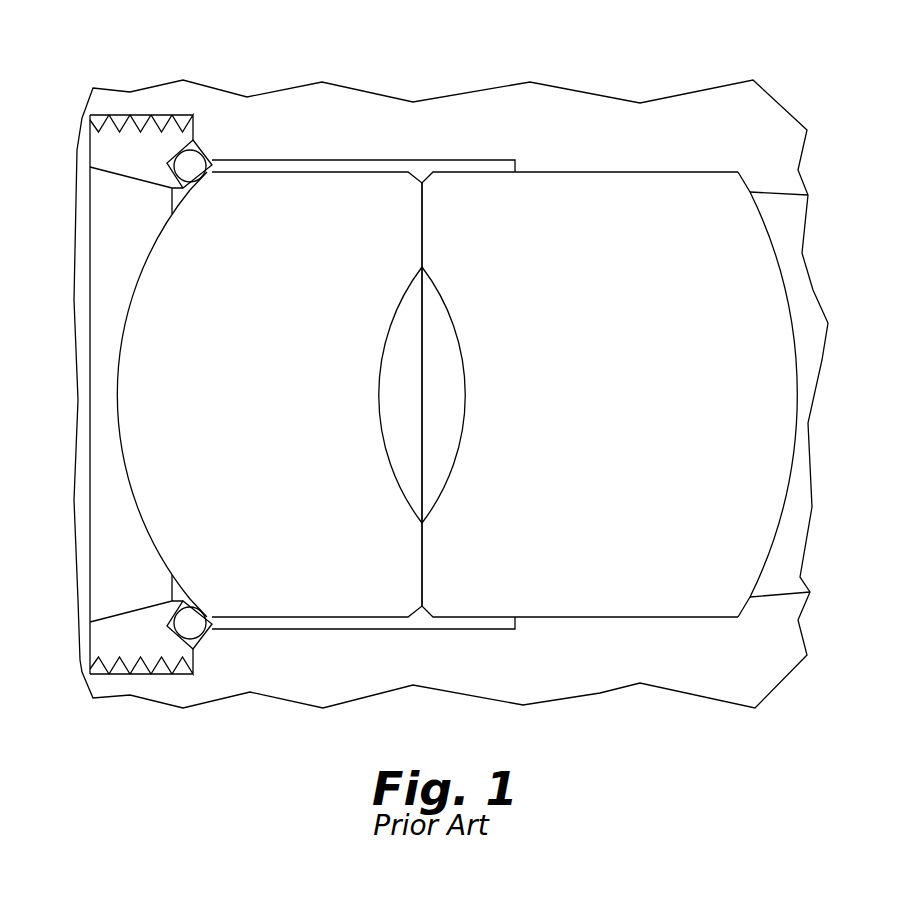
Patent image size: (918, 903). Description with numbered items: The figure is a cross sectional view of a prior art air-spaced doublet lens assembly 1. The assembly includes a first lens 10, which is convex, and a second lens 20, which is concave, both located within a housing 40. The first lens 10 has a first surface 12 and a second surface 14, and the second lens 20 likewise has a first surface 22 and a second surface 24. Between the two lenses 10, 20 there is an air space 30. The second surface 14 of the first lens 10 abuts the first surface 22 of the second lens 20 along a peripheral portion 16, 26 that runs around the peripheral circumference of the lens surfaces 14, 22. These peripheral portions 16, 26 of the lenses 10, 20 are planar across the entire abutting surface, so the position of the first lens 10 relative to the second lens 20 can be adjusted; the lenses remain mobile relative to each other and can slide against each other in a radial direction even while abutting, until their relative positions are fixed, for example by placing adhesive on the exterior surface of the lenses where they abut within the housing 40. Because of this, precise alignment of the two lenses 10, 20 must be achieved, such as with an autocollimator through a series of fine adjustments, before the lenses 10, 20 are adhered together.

The doublet lens assembly 1 is at (133, 55).
The first lens 10 is at (218, 395).
The first surface 12 is at (117, 412).
The second surface 14 is at (393, 470).
The peripheral portion 16 is at (417, 220).
The second lens 20 is at (648, 404).
The first surface 22 is at (445, 340).
The second surface 24 is at (793, 327).
The peripheral portion 26 is at (423, 233).
The air space 30 is at (378, 388).
The housing 40 is at (258, 107).